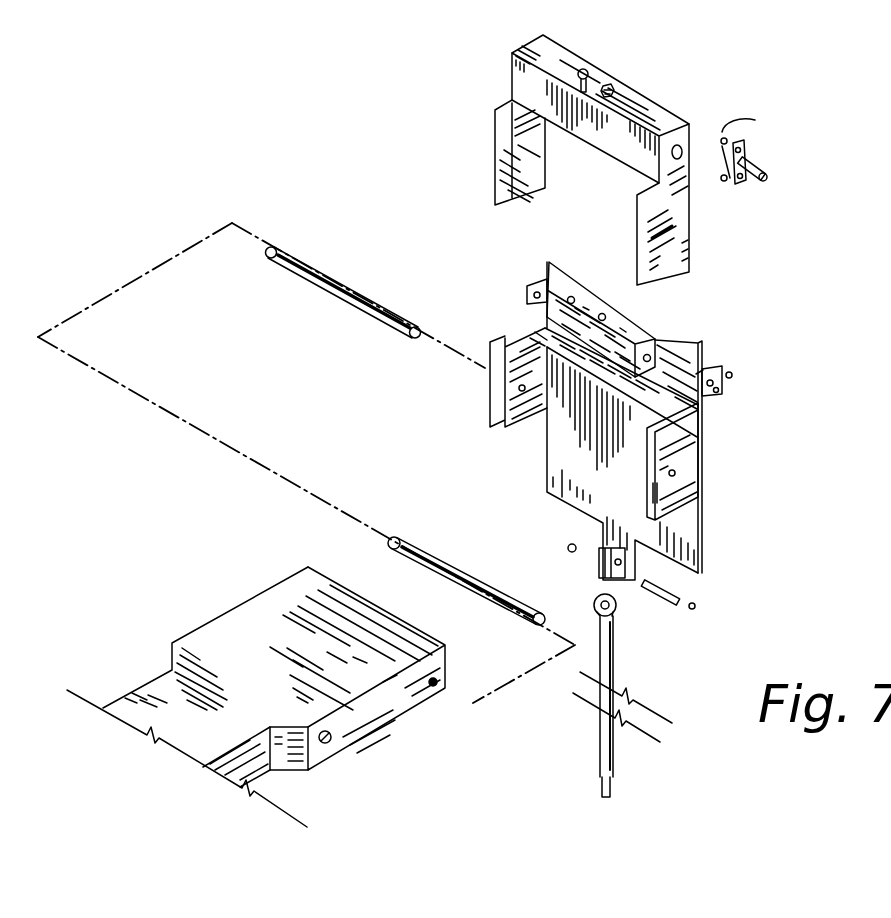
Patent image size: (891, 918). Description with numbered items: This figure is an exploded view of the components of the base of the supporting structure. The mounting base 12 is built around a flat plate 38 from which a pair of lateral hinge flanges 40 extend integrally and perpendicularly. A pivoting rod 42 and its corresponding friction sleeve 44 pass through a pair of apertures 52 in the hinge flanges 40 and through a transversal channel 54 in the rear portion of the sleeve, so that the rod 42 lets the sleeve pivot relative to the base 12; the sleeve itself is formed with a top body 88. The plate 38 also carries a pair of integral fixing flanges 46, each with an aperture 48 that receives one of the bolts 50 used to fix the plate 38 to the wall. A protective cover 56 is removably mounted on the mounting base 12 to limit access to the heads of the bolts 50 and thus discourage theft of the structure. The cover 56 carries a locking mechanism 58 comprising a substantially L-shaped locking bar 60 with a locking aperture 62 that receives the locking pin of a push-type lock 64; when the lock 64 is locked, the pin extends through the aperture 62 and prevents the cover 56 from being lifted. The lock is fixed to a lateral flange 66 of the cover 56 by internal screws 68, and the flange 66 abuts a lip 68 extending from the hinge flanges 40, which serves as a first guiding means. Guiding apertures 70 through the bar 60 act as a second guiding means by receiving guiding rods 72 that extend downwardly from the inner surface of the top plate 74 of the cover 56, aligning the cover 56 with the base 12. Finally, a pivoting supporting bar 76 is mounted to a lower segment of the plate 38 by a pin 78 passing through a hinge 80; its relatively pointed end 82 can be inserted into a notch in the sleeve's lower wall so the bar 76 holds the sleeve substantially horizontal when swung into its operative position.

The mounting base 12 is at (783, 370).
The flat plate 38 is at (650, 530).
The lateral hinge flanges 40 is at (593, 448).
The pivoting rod 42 is at (347, 283).
The friction sleeve 44 is at (470, 570).
The fixing flanges 46 is at (530, 283).
The aperture 48 is at (717, 393).
The bolts 50 is at (733, 375).
The apertures 52 is at (500, 342).
The transversal channel 54 is at (438, 690).
The protective cover 56 is at (713, 112).
The locking mechanism 58 is at (784, 202).
The locking bar 60 is at (640, 304).
The locking aperture 62 is at (690, 340).
The push-type lock 64 is at (757, 168).
The lateral flange 66 is at (642, 226).
The internal screws 68 is at (522, 388).
The guiding apertures 70 is at (603, 316).
The guiding rods 72 is at (585, 68).
The top plate 74 is at (608, 160).
The pivoting supporting bar 76 is at (634, 706).
The pin 78 is at (658, 588).
The hinge 80 is at (596, 570).
The pointed end 82 is at (608, 784).
The top body 88 is at (242, 627).